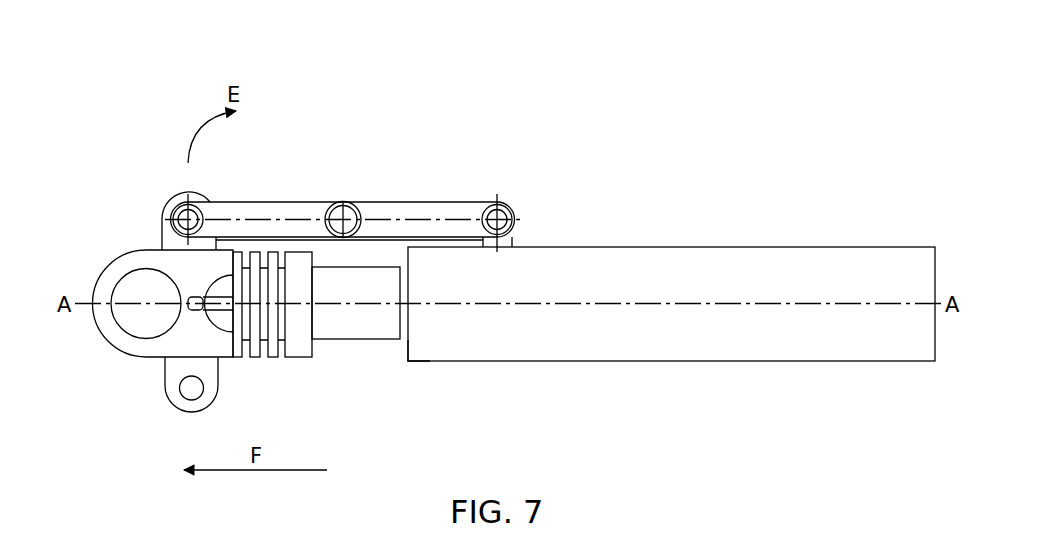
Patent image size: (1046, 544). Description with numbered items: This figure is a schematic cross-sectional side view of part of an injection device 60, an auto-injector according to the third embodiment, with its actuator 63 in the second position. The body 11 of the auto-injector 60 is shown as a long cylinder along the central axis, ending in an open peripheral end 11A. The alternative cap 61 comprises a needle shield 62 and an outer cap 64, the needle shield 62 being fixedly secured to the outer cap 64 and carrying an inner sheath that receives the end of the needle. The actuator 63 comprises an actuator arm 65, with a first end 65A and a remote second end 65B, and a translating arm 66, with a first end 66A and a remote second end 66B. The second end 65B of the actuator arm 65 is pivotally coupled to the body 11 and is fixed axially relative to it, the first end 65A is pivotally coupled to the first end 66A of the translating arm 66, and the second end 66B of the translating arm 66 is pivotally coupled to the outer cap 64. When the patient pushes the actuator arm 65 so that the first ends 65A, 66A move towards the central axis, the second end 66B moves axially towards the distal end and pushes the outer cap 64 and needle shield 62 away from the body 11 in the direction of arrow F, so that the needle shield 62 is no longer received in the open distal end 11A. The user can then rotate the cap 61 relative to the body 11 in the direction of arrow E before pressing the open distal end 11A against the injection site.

The body 11 is at (790, 258).
The open peripheral end of the body 11A is at (408, 353).
The injection device 60 is at (157, 113).
The cap 61 is at (114, 225).
The needle shield 62 is at (337, 318).
The actuator 63 is at (286, 93).
The outer cap 64 is at (138, 348).
The actuator arm 65 is at (410, 217).
The first end of the actuator arm 65A is at (367, 217).
The second end of the actuator arm 65B is at (472, 217).
The translating arm 66 is at (258, 218).
The first end of the translating arm 66A is at (315, 217).
The second end of the translating arm 66B is at (208, 213).